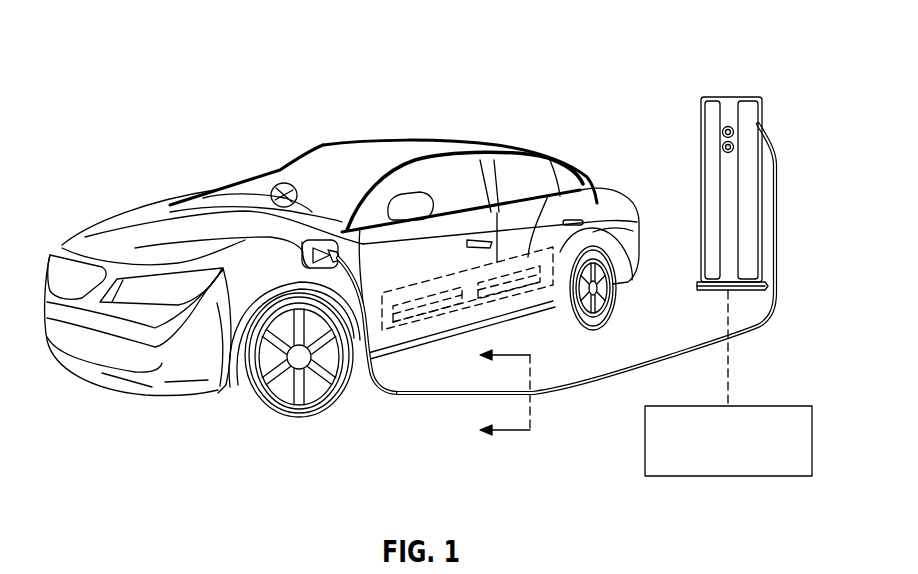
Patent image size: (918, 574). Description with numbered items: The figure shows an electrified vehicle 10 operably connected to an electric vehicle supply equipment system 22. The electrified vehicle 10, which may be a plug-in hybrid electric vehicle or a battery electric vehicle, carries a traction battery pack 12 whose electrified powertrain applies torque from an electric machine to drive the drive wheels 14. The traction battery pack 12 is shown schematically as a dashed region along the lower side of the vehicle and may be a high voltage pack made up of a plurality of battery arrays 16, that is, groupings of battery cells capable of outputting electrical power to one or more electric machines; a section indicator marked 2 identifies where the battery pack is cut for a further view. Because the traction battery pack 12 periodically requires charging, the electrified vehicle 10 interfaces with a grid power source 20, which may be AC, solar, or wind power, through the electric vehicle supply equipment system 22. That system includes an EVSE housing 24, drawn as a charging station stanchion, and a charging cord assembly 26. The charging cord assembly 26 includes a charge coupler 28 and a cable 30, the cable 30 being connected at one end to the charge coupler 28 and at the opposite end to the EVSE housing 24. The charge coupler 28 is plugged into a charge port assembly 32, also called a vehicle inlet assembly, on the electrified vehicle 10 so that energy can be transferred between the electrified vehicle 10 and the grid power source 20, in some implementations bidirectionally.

The electrified vehicle 10 is at (106, 70).
The traction battery pack 12 is at (524, 258).
The drive wheels 14 is at (617, 293).
The battery arrays 16 is at (410, 312).
The grid power source 20 is at (812, 443).
The electric vehicle supply equipment (EVSE) system 22 is at (716, 84).
The EVSE housing 24 is at (748, 110).
The charging cord assembly 26 is at (589, 388).
The charge coupler 28 is at (323, 240).
The cable 30 is at (393, 396).
The charge port assembly 32 is at (303, 260).
The section line 2- 2 is at (496, 392).